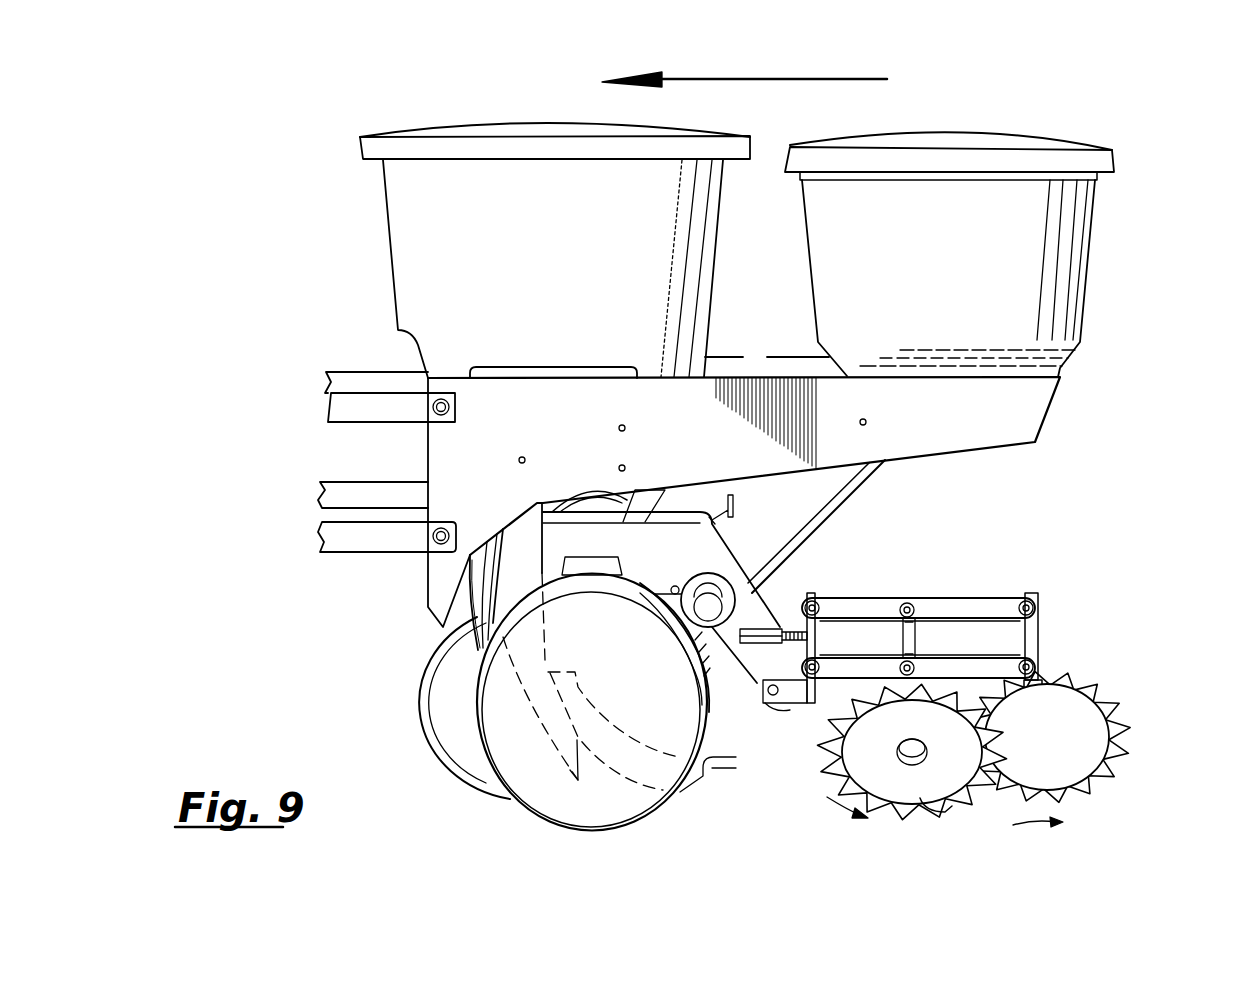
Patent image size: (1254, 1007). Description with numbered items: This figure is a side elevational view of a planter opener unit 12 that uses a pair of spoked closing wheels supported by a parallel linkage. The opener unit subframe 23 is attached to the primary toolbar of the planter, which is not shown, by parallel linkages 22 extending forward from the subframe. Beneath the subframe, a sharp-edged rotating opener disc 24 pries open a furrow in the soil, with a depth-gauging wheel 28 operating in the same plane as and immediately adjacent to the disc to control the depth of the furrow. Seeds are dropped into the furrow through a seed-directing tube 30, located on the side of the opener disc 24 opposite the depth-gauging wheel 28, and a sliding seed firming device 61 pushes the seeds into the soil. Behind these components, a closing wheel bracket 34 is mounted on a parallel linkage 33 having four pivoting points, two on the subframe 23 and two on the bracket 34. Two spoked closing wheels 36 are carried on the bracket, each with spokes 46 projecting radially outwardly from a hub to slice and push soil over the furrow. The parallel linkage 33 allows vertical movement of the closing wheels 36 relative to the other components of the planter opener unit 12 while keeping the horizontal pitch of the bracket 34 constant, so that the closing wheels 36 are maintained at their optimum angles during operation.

The planter opener unit 12 is at (1100, 494).
The parallel linkages 22 is at (316, 522).
The opener unit subframe 23 is at (705, 548).
The opener disc 24 is at (412, 719).
The depth-gauging wheel 28 is at (531, 794).
The seed-directing tube 30 is at (517, 570).
The parallel linkage 33 is at (884, 600).
The closing wheel bracket 34 is at (1037, 660).
The spoked closing wheel 36 is at (1078, 724).
The spokes 46 is at (932, 803).
The sliding seed firming device 61 is at (714, 760).